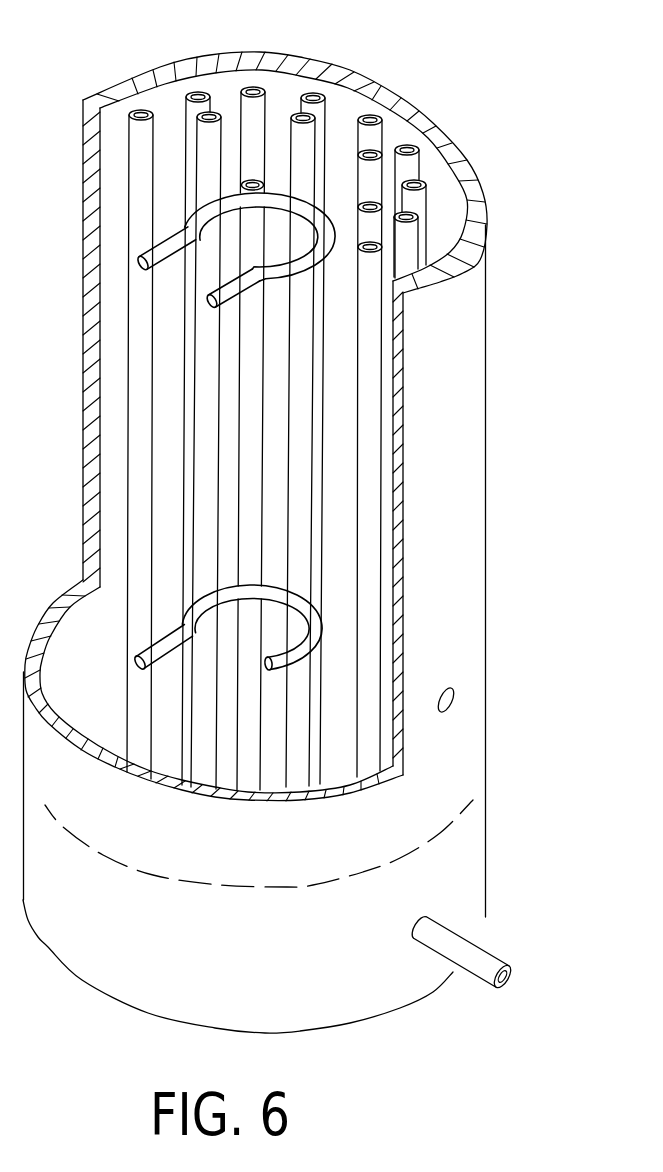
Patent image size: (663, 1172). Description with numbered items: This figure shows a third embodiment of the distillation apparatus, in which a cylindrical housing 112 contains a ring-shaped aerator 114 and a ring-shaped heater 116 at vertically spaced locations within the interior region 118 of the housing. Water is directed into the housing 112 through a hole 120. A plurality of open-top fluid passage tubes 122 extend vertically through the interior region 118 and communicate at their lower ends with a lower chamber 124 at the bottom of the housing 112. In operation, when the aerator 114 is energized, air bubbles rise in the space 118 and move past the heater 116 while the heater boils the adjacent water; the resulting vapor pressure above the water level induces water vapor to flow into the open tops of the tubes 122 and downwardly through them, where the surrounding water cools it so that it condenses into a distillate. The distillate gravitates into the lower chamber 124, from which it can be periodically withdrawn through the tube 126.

The cylindrical housing 112 is at (472, 505).
The ring-shaped aerator 114 is at (180, 624).
The ring-shaped heater 116 is at (325, 247).
The interior region 118 is at (447, 170).
The hole 120 is at (458, 692).
The fluid passage tubes 122 is at (262, 104).
The lower chamber 124 is at (457, 863).
The tube 126 is at (485, 958).